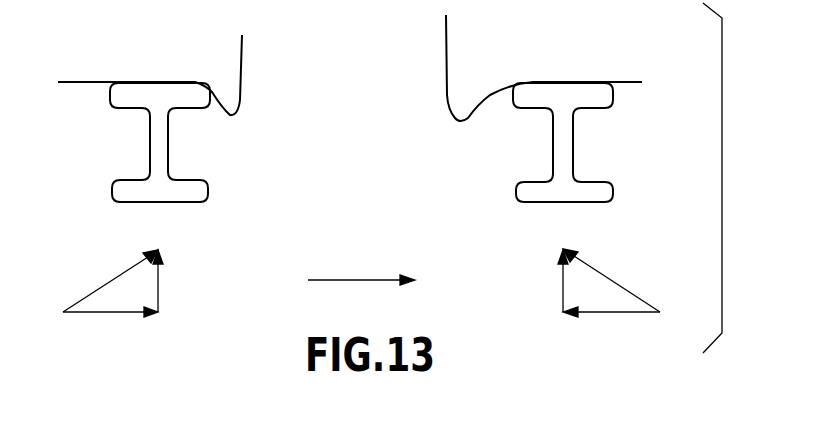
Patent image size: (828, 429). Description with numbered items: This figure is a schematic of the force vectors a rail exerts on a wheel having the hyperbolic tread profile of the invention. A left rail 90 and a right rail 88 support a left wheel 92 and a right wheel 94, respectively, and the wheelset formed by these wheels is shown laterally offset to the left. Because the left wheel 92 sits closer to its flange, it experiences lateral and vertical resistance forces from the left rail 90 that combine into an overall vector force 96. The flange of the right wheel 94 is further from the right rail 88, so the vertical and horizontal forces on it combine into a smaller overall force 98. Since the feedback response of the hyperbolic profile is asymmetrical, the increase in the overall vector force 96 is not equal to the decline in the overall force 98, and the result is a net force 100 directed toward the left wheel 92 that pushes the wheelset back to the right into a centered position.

The right rail 88 is at (613, 95).
The left rail 90 is at (110, 96).
The left wheel 92 is at (243, 70).
The right wheel 94 is at (445, 80).
The overall vector force 96 is at (110, 282).
The overall force 98 is at (615, 282).
The net force 100 is at (360, 280).